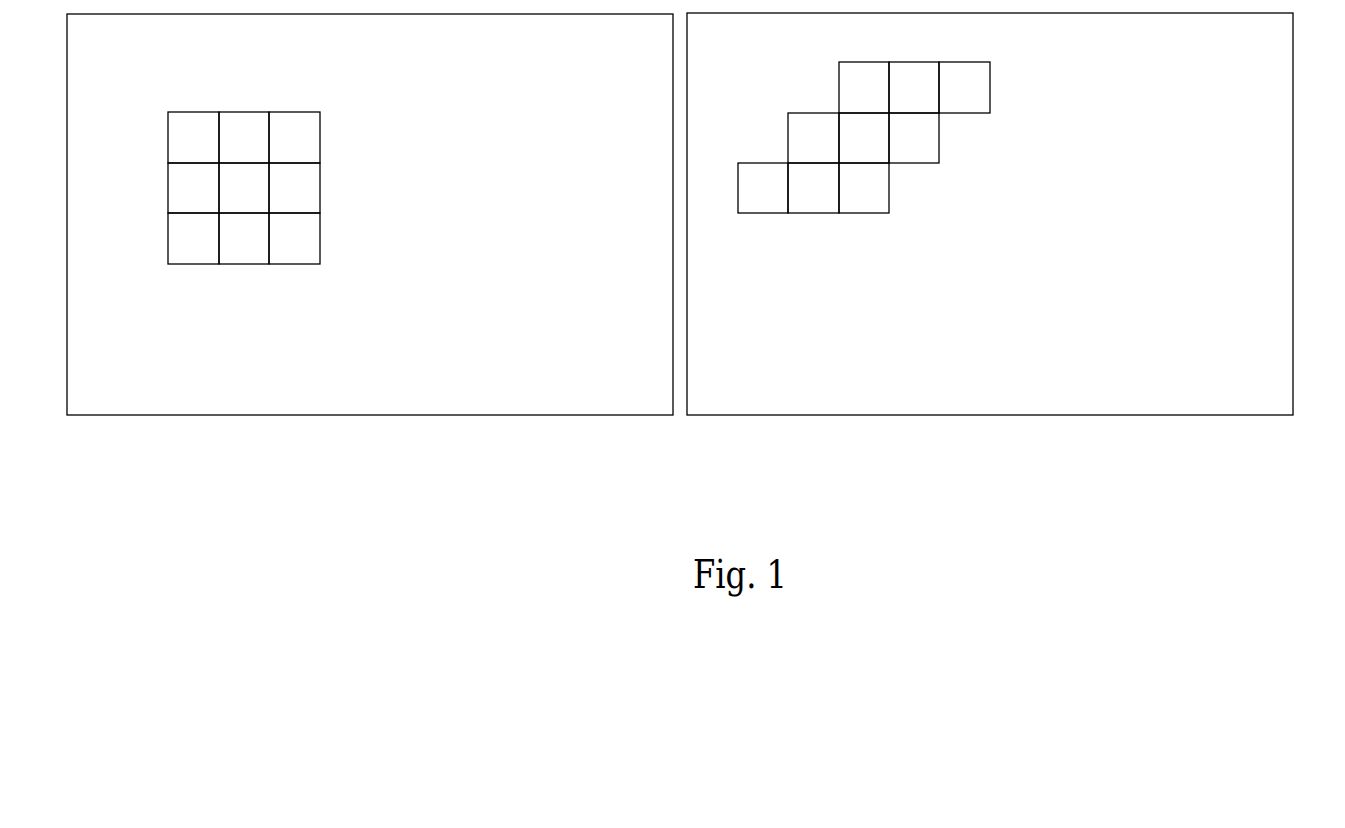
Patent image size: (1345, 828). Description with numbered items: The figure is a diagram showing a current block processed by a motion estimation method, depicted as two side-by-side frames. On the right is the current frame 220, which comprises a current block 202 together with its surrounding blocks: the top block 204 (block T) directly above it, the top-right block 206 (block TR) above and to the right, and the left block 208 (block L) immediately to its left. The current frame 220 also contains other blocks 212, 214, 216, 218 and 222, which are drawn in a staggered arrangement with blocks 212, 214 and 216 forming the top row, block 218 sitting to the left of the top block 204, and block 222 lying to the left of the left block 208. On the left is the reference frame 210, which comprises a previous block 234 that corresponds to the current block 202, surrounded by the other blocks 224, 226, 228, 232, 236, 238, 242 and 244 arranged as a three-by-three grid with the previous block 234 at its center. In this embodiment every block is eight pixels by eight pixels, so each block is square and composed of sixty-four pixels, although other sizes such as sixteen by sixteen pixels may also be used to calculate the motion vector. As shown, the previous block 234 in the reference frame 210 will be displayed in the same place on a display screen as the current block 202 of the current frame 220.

The reference frame 210 is at (597, 415).
The current frame 220 is at (1218, 415).
The current block 202 is at (864, 188).
The top block 204 is at (864, 138).
The top-right block 206 is at (914, 138).
The left block 208 is at (813, 188).
The other block 212 is at (864, 87).
The other block 214 is at (914, 87).
The other block 216 is at (964, 87).
The other block 218 is at (813, 138).
The other block 222 is at (763, 188).
The other block 224 is at (193, 137).
The other block 226 is at (244, 137).
The other block 228 is at (294, 137).
The other block 232 is at (193, 188).
The previous block 234 is at (244, 188).
The other block 236 is at (294, 188).
The other block 238 is at (193, 238).
The other block 242 is at (244, 238).
The other block 244 is at (294, 238).